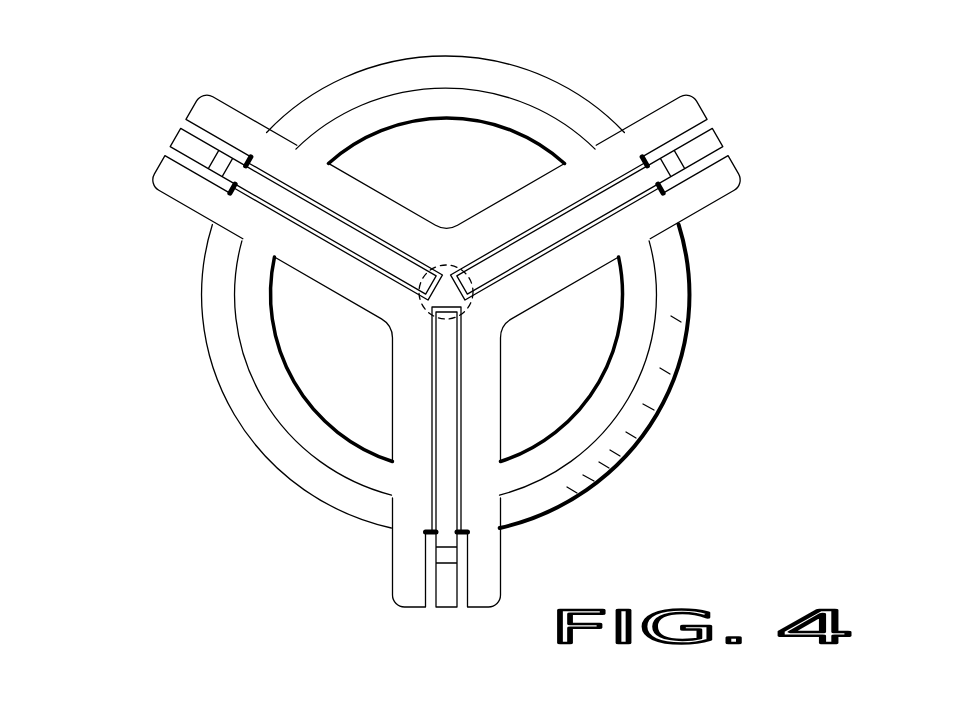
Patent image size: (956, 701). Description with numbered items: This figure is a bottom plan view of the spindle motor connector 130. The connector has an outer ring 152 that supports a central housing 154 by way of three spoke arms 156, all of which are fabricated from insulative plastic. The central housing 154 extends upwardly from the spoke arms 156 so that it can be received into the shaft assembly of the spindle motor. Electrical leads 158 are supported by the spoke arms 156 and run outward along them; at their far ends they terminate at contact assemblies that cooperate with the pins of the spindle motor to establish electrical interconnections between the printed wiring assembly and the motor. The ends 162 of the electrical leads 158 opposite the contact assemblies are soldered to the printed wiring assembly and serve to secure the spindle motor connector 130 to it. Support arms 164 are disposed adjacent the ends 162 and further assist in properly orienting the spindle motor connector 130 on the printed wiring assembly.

The spindle motor connector 130 is at (330, 50).
The outer ring 152 is at (535, 86).
The central housing 154 is at (432, 264).
The spoke arms 156 is at (360, 288).
The electrical leads 158 is at (298, 214).
The ends 162 is at (181, 142).
The support arms 164 is at (201, 108).